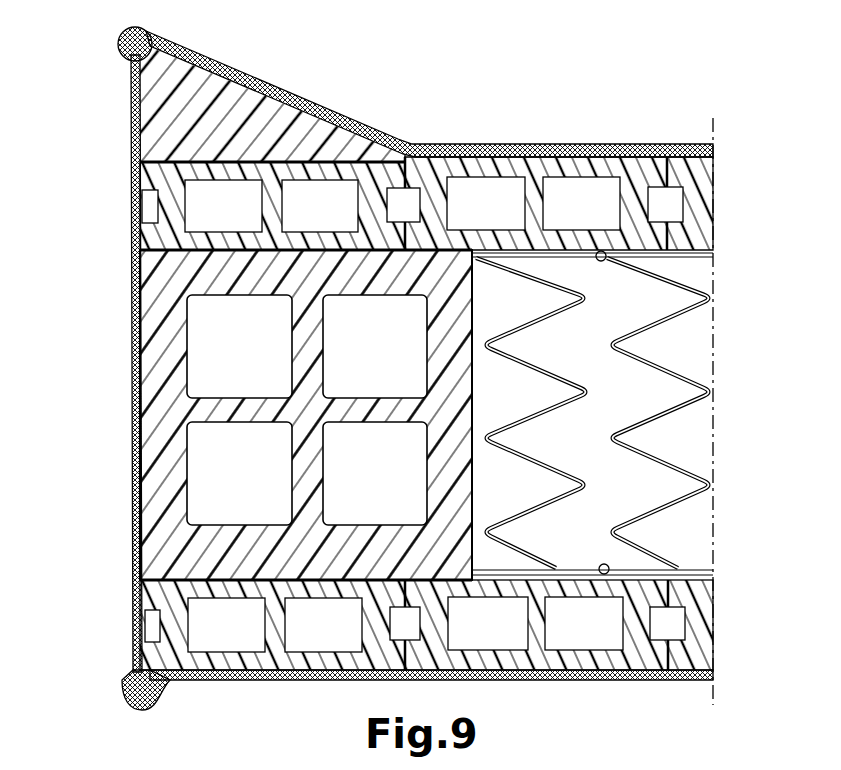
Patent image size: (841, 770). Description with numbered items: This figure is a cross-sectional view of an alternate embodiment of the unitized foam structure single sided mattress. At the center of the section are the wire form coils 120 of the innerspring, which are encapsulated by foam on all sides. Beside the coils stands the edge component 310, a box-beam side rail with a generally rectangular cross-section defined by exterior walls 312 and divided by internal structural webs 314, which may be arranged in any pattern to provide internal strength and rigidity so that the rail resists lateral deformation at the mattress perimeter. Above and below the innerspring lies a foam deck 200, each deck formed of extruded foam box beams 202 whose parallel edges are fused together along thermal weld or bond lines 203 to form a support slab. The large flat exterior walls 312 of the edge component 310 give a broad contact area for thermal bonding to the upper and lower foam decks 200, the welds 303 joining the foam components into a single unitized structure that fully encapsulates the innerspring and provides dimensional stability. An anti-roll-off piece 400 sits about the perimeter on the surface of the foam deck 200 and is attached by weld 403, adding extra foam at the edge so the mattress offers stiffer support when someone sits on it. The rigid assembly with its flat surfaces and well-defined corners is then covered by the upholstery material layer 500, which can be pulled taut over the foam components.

The wire form coils 120 is at (673, 413).
The foam deck 200 is at (600, 143).
The foam box beams 202 is at (438, 177).
The thermal weld or bond lines 203 is at (697, 228).
The welds 303 is at (155, 258).
The edge component 310 is at (131, 398).
The exterior walls 312 is at (133, 480).
The internal structural webs 314 is at (240, 413).
The anti-roll-off piece 400 is at (207, 128).
The weld 403 is at (143, 168).
The upholstery material layer 500 is at (713, 148).